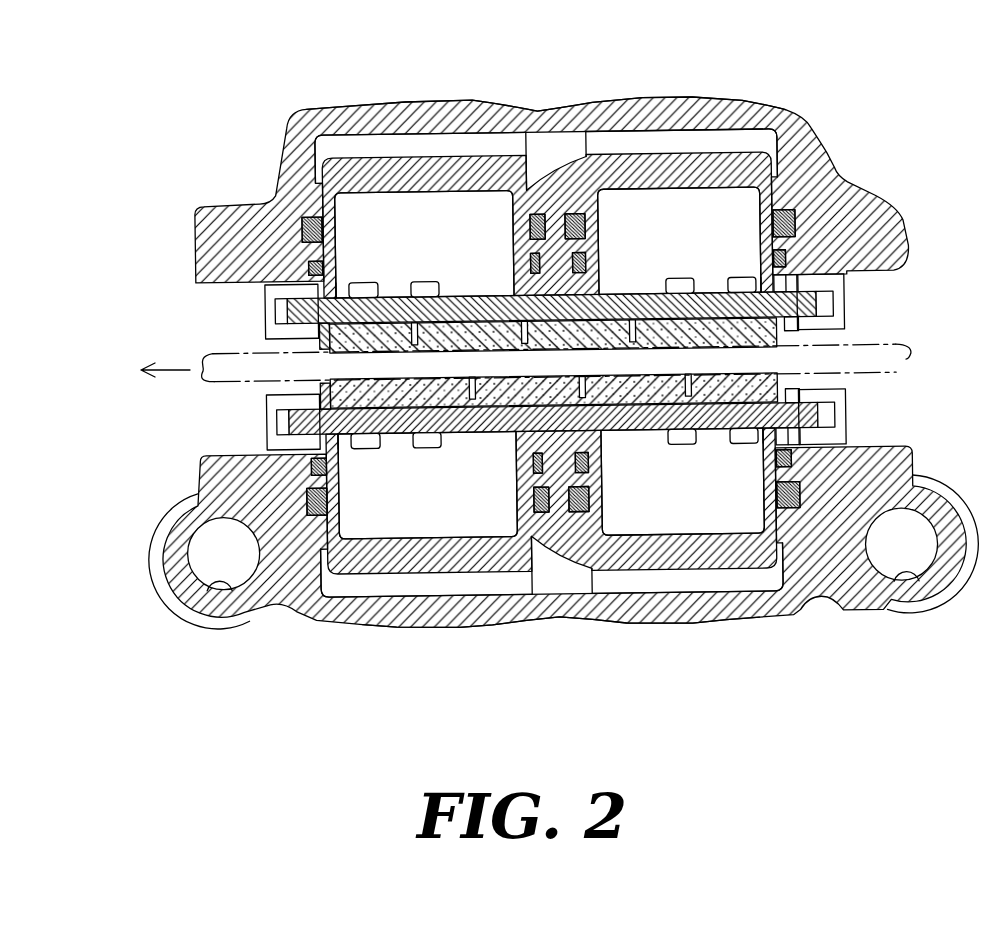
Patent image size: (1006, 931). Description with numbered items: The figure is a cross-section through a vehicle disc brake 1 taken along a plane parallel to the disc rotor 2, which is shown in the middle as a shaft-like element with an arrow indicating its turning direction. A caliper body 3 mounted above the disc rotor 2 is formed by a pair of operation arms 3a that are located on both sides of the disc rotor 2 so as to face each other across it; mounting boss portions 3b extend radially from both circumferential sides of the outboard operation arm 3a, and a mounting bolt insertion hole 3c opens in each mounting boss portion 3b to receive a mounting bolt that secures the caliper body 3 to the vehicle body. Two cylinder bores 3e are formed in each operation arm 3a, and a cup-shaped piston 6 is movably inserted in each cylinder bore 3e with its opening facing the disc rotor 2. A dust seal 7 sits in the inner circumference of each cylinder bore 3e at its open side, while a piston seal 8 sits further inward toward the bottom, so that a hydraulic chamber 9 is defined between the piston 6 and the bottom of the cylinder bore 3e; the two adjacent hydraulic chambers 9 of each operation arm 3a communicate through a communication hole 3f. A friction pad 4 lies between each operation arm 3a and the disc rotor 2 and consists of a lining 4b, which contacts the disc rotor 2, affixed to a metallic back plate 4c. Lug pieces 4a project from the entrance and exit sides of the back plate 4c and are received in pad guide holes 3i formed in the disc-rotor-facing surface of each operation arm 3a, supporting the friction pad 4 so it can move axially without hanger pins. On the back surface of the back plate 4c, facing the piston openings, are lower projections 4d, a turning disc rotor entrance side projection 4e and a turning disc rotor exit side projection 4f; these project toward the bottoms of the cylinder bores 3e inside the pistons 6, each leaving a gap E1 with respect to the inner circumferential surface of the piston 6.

The vehicle disc brake 1 is at (550, 346).
The disc rotor 2 is at (916, 357).
The caliper body 3 is at (770, 97).
The operation arm 3a is at (603, 117).
The mounting boss portion 3b is at (170, 607).
The mounting bolt insertion hole 3c is at (207, 590).
The cylinder bore 3e is at (338, 204).
The communication hole 3f is at (555, 137).
The pad guide hole 3i is at (268, 293).
The friction pad 4 is at (500, 244).
The lug piece 4a is at (280, 312).
The lining 4b is at (487, 345).
The back plate 4c is at (462, 338).
The lower projection 4d is at (425, 287).
The turning disc rotor entrance side projection 4e is at (372, 287).
The turning disc rotor exit side projection 4f is at (735, 288).
The piston 6 is at (380, 167).
The dust seal 7 is at (307, 268).
The piston seal 8 is at (303, 228).
The hydraulic chamber 9 is at (427, 143).
The gap E1 is at (342, 290).